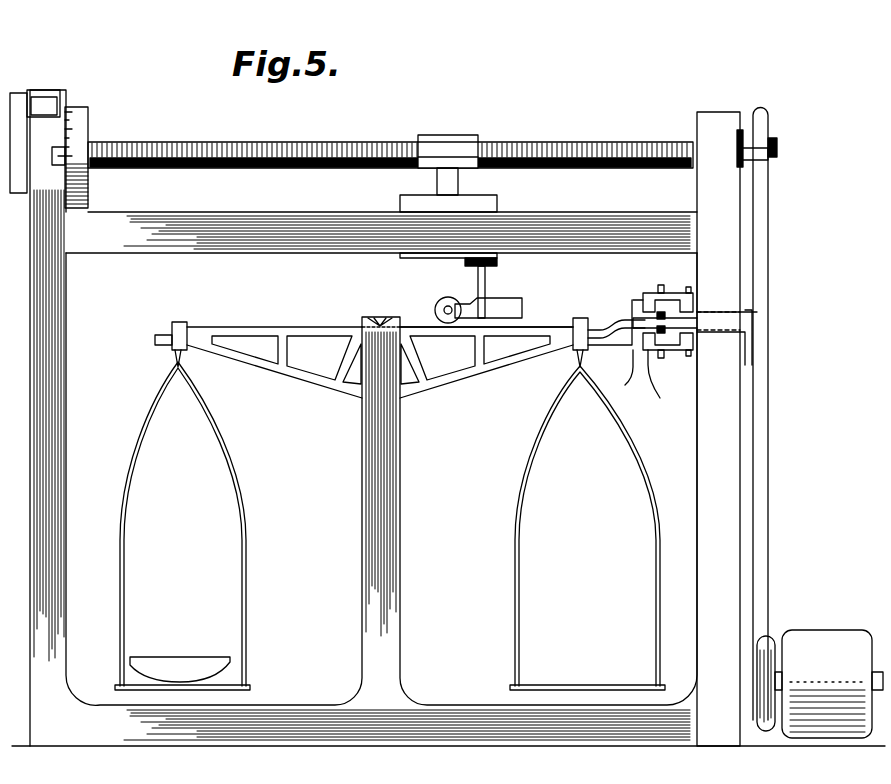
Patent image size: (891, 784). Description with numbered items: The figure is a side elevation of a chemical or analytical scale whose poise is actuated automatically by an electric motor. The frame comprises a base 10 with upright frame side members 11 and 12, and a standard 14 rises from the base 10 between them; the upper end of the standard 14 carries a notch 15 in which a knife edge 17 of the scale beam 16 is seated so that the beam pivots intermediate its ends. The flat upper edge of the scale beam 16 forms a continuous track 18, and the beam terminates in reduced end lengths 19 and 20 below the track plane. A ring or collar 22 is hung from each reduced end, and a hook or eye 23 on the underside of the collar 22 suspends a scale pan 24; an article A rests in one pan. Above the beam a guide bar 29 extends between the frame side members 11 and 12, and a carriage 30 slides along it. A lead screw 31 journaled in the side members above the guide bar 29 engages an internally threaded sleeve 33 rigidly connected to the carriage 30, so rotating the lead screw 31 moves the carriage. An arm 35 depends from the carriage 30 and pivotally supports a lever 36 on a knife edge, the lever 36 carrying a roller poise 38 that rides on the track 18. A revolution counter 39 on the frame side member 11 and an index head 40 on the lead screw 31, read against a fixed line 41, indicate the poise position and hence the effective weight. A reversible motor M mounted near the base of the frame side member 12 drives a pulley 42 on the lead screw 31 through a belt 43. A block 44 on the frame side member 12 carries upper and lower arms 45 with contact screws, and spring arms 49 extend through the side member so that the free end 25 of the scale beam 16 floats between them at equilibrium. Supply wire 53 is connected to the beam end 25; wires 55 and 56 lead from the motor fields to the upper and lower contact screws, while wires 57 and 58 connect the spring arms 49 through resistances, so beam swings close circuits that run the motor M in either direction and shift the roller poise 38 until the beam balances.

The base 10 is at (257, 734).
The frame side member 11 is at (64, 394).
The frame side member 12 is at (705, 405).
The standard 14 is at (387, 514).
The notch 15 is at (390, 317).
The scale beam 16 is at (430, 383).
The knife edge 17 is at (376, 318).
The track 18 is at (428, 325).
The reduced end length 19 is at (160, 333).
The reduced end length 20 is at (592, 318).
The ring or collar 22 is at (182, 328).
The hook or eye 23 is at (192, 357).
The scale pan 24 is at (253, 687).
The free end of scale beam 25 is at (618, 318).
The guide bar 29 is at (603, 212).
The carriage 30 is at (492, 203).
The lead screw 31 is at (558, 143).
The internally threaded sleeve 33 is at (453, 140).
The arm 35 is at (486, 274).
The lever 36 is at (507, 310).
The roller poise 38 is at (452, 299).
The revolution counter 39 is at (32, 93).
The index head 40 is at (88, 119).
The fixed point or line 41 is at (60, 160).
The pulley 42 is at (770, 120).
The belt 43 is at (770, 474).
The block or supporting member 44 is at (690, 317).
The arm 45 is at (668, 300).
The spring arm 49 is at (715, 318).
The supply wire 53 is at (628, 340).
The wire 55 is at (627, 383).
The wire 56 is at (659, 384).
The wire 57 is at (760, 312).
The wire 58 is at (747, 344).
The article weighed A is at (163, 660).
The motor M is at (827, 637).